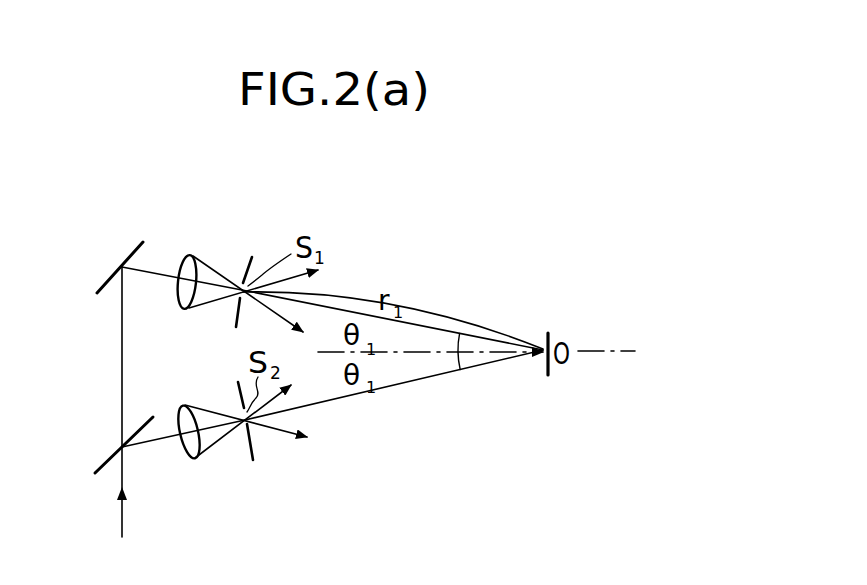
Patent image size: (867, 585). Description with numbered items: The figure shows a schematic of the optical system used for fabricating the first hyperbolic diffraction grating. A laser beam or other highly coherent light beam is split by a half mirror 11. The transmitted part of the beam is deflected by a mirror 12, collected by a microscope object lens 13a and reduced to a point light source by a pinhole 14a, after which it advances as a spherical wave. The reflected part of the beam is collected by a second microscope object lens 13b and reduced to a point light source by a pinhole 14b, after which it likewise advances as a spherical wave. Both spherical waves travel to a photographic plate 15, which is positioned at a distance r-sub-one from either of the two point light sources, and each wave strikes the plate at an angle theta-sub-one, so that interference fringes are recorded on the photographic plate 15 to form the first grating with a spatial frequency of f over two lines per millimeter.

The half mirror 11 is at (102, 465).
The mirror 12 is at (102, 281).
The microscope object lens 13a is at (193, 255).
The microscope object lens 13b is at (184, 407).
The pinhole 14a is at (251, 263).
The pinhole 14b is at (253, 453).
The photographic plate 15 is at (553, 337).